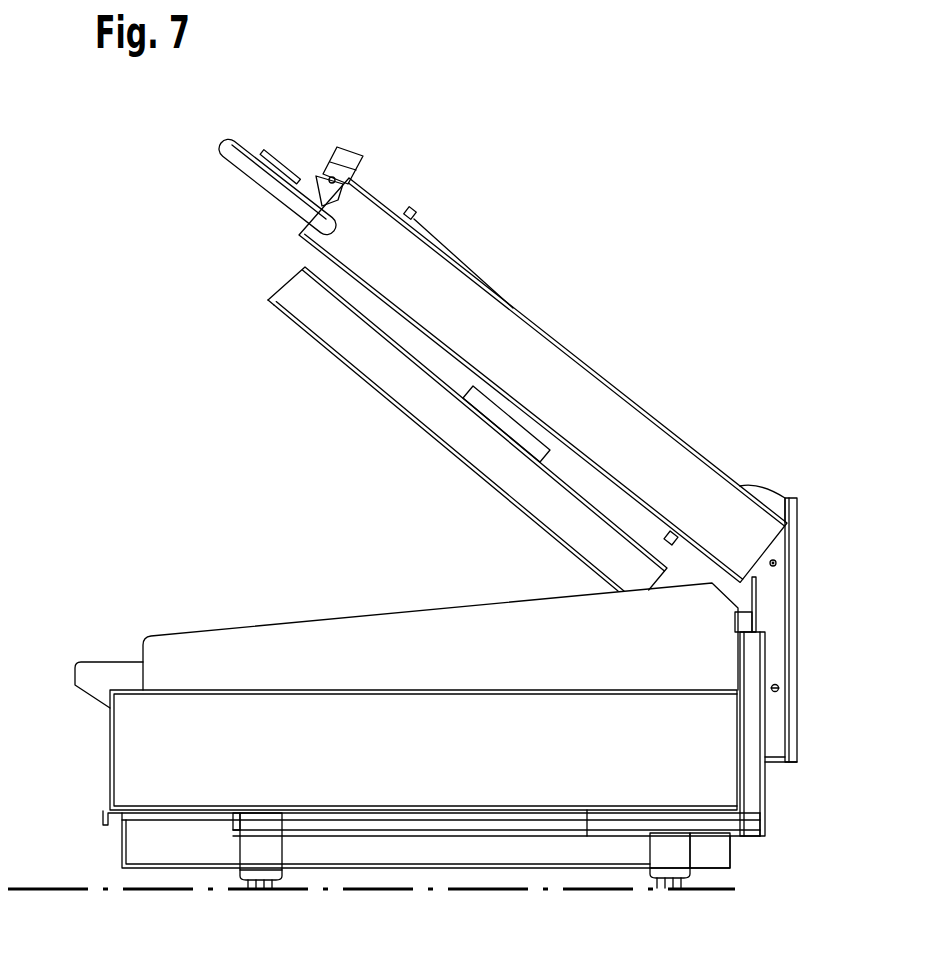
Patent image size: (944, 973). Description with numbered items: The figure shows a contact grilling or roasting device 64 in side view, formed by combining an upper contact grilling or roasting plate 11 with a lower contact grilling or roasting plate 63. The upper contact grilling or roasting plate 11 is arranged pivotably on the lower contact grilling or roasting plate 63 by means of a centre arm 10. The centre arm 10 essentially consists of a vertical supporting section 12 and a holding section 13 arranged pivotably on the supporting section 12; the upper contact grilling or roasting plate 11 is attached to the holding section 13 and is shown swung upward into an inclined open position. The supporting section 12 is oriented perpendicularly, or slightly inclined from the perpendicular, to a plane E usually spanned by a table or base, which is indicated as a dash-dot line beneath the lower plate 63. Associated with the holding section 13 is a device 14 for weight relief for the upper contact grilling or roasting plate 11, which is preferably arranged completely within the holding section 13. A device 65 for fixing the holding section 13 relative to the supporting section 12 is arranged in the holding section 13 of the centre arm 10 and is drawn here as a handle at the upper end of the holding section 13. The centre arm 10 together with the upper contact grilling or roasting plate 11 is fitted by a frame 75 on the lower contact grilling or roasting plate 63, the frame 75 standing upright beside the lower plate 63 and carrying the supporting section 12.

The centre arm 10 is at (668, 365).
The upper contact grilling or roasting plate 11 is at (442, 410).
The vertical supporting section 12 is at (770, 598).
The holding section 13 is at (500, 332).
The device for weight relief 14 is at (370, 170).
The lower contact grilling or roasting plate 63 is at (142, 755).
The contact grilling or roasting device 64 is at (137, 527).
The device for fixing the holding section 65 is at (300, 150).
The frame 75 is at (779, 733).
The plane E is at (44, 887).